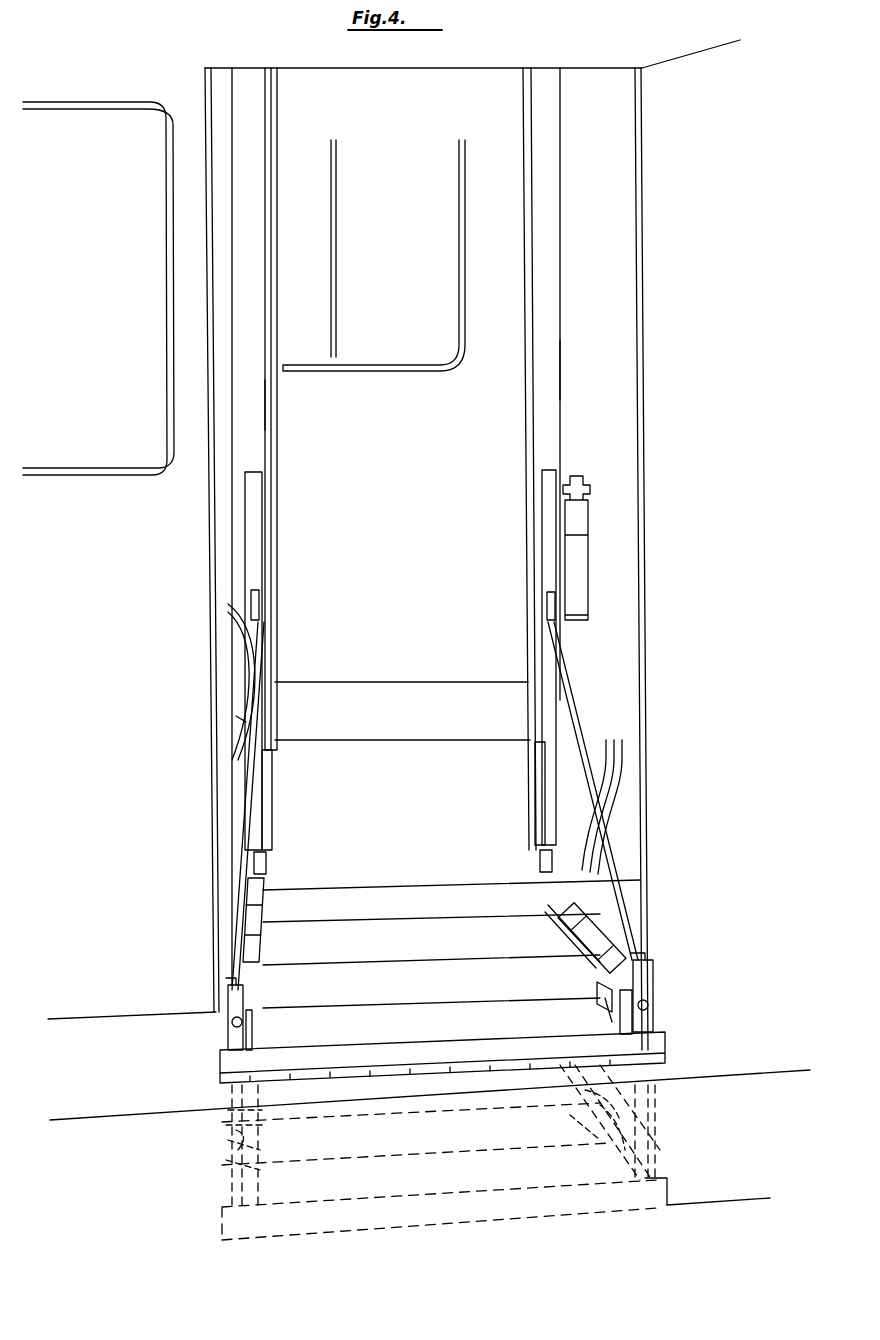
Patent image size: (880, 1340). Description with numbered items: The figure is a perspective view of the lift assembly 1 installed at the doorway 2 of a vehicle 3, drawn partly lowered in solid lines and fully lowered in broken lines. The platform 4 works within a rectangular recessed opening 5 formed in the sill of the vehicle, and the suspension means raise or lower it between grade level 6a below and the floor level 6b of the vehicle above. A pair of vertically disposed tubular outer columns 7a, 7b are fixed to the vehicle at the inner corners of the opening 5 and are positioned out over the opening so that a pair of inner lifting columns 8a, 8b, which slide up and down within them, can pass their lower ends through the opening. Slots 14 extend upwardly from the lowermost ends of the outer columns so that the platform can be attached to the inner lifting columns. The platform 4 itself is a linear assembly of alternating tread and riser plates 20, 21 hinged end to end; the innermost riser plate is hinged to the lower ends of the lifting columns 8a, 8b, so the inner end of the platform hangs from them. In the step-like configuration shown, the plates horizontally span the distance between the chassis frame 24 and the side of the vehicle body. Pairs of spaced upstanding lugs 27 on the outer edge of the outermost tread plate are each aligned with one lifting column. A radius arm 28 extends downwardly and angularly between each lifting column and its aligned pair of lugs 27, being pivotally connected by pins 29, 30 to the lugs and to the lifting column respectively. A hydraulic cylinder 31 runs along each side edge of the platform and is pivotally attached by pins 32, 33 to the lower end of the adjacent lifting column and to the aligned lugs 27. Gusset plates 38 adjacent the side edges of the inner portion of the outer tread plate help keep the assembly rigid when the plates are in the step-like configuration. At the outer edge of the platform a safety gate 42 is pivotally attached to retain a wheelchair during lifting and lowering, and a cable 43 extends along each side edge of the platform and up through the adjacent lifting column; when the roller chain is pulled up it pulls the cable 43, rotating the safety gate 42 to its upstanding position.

The lift assembly 1 is at (638, 848).
The doorway 2 is at (240, 448).
The vehicle 3 is at (106, 672).
The platform 4 is at (436, 890).
The recessed opening 5 is at (392, 748).
The grade level 6a is at (735, 1202).
The floor level 6b is at (640, 773).
The outer column 7a is at (268, 412).
The outer column 7b is at (556, 368).
The inner lifting column 8a is at (262, 797).
The inner lifting column 8b is at (540, 780).
The slots 14 is at (255, 514).
The tread plates 20 is at (375, 930).
The riser plates 21 is at (318, 897).
The chassis frame 24 is at (405, 812).
The lugs 27 is at (255, 1042).
The radius arm 28 is at (245, 870).
The pin 29 is at (228, 992).
The pin 30 is at (262, 622).
The hydraulic cylinder 31 is at (270, 925).
The pin 32 is at (268, 866).
The pin 33 is at (230, 1021).
The gusset plates 38 is at (598, 990).
The safety gate 42 is at (425, 1055).
The cable 43 is at (555, 908).